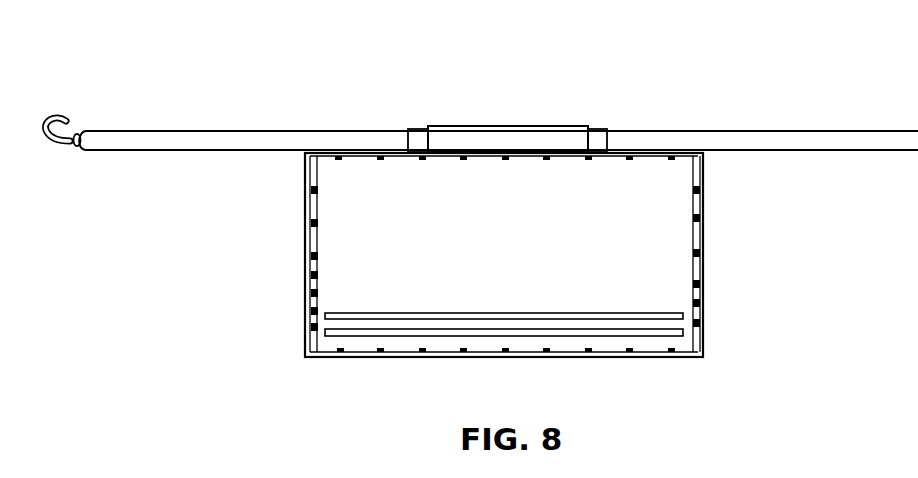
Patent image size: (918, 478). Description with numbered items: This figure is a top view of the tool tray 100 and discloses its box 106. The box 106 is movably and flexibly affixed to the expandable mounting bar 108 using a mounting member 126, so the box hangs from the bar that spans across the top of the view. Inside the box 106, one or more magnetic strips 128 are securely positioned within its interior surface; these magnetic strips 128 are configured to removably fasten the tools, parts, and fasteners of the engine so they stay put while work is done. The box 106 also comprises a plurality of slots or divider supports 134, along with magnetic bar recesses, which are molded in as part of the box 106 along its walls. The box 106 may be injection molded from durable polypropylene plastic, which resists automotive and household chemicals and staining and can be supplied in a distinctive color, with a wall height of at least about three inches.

The tool tray 100 is at (143, 52).
The expandable mounting bar 108 is at (264, 137).
The mounting member 126 is at (528, 139).
The box 106 is at (683, 205).
The slots or divider supports 134 is at (700, 257).
The magnetic strips 128 is at (568, 314).